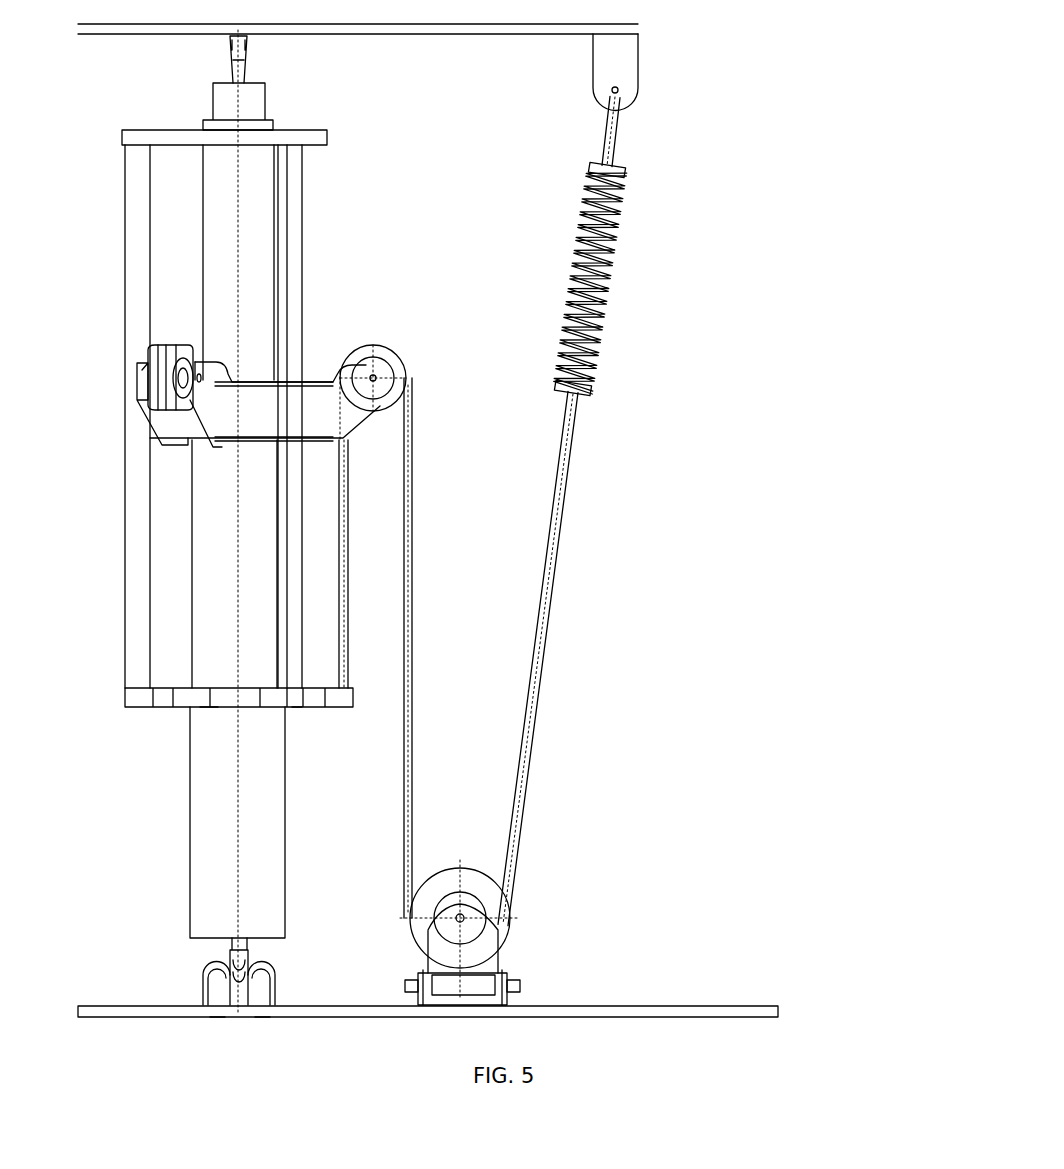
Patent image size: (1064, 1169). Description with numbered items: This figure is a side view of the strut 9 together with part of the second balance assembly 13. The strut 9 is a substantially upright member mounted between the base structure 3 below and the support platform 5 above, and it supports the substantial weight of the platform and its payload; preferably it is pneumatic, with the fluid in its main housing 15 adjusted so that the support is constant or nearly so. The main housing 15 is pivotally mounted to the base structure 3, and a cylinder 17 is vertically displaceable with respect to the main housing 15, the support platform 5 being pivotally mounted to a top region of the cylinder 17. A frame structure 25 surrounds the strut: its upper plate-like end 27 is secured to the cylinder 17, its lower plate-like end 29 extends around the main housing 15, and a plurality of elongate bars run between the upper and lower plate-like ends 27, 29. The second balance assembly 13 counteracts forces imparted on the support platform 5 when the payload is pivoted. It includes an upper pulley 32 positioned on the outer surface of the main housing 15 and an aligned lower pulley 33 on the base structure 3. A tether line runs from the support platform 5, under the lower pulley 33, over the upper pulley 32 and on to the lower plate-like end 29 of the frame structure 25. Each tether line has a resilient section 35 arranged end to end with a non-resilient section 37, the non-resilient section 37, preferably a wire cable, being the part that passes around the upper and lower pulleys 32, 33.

The base structure 3 is at (687, 1002).
The support platform 5 is at (632, 36).
The strut 9 is at (90, 464).
The second balance assembly 13 is at (719, 336).
The main housing 15 is at (225, 813).
The cylinder 17 is at (225, 188).
The frame structure 25 is at (292, 236).
The upper plate-like end 27 is at (150, 135).
The lower plate-like end 29 is at (125, 705).
The upper pulley 32 is at (396, 357).
The lower pulley 33 is at (470, 917).
The resilient section 35 is at (612, 230).
The non-resilient section 37 is at (414, 527).